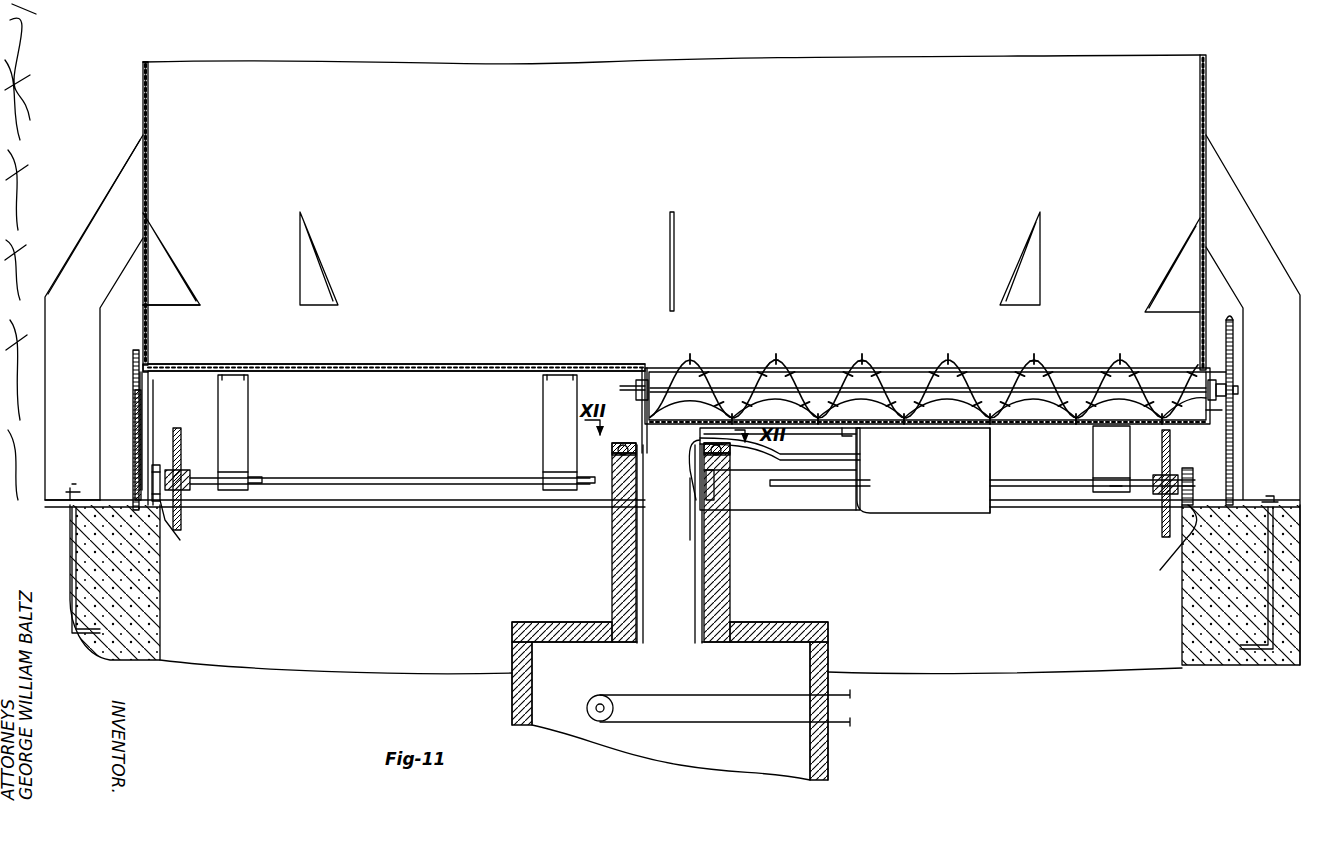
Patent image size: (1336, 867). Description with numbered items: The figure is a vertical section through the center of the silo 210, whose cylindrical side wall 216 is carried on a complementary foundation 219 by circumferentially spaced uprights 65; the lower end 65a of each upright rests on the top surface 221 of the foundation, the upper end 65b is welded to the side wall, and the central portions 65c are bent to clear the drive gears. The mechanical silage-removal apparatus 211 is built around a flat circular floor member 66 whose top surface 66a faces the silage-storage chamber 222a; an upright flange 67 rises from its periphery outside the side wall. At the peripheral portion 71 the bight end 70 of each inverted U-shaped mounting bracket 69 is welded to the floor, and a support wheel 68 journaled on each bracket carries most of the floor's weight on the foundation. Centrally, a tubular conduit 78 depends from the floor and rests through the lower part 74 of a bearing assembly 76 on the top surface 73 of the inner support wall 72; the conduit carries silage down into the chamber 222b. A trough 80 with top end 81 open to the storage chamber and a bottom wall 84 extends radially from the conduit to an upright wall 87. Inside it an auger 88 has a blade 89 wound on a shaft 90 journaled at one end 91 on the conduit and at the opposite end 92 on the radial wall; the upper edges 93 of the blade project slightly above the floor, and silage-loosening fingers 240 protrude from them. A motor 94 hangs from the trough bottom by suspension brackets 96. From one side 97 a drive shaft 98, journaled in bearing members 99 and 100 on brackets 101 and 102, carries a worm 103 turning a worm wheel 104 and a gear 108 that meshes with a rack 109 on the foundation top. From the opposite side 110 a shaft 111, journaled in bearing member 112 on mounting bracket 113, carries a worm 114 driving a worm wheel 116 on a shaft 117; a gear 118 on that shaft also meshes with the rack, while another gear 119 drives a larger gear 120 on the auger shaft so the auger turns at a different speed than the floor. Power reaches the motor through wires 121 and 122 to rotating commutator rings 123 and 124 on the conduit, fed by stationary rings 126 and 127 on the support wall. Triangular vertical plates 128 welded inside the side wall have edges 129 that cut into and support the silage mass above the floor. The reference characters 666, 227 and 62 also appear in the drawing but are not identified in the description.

The mechanical silage-removal apparatus 211 is at (993, 125).
The silage-storage chamber 222a is at (275, 100).
The vertical side wall 216 is at (1210, 70).
The silo 210 is at (1238, 92).
The vertical plates 128 is at (180, 262).
The edges 129 is at (188, 278).
The uprights 65 is at (62, 262).
The upper end 65b is at (138, 160).
The central portions 65c is at (88, 322).
The lower end 65a is at (64, 492).
The top surface 221 is at (120, 505).
The floor member 66 is at (447, 378).
The top surface 66a is at (410, 364).
The bottom panel lower surface 666 is at (368, 372).
The peripheral portion 71 is at (146, 367).
The upright flange 67 is at (132, 356).
The inverted U-shaped mounting bracket 69 is at (132, 382).
The bight end 70 is at (150, 375).
The support wheels 68 is at (134, 408).
The gear 108 is at (156, 465).
The worm wheel 104 is at (182, 446).
The worm 103 is at (188, 490).
The rack 109 is at (164, 530).
The bracket 101 is at (248, 420).
The bearing member 99 is at (245, 476).
The drive shaft 98 is at (388, 480).
The bracket 102 is at (545, 396).
The bearing member 100 is at (560, 476).
The bottom wall 84 is at (1035, 424).
The top end 81 is at (905, 372).
The trough 80 is at (820, 375).
The auger 88 is at (722, 380).
The auger blade 89 is at (780, 372).
The upper edges 93 is at (850, 395).
The silage-loosening fingers 240 is at (955, 372).
The one end 91 is at (632, 372).
The shaft 90 is at (660, 375).
The support wall 72 is at (610, 540).
The conduit 78 is at (640, 584).
The top surface 73 is at (614, 452).
The bearing assembly 76 is at (655, 455).
The commutator ring 124 is at (695, 475).
The commutator ring 123 is at (695, 500).
The stationary commutator ring 126 is at (712, 490).
The stationary commutator ring 127 is at (725, 488).
The wire 122 is at (838, 460).
The lower part 74 is at (735, 458).
The wire 121 is at (818, 463).
The suspension brackets 96 is at (862, 440).
The motor 94 is at (925, 490).
The one side 97 is at (862, 492).
The bar 227 is at (750, 694).
The shaft 111 is at (1035, 486).
The opposite side 110 is at (1000, 515).
The mounting bracket 113 is at (1093, 458).
The bearing member 112 is at (1112, 492).
The worm wheel 116 is at (1171, 445).
The worm 114 is at (1160, 494).
The shaft 117 is at (1200, 490).
The gear 118 is at (1168, 545).
The gear 119 is at (1238, 498).
The frame 62 is at (1262, 232).
The larger gear 120 is at (1236, 318).
The upright wall 87 is at (1226, 403).
The opposite end 92 is at (1222, 388).
The foundation 219 is at (166, 600).
The chamber 222b is at (1108, 662).